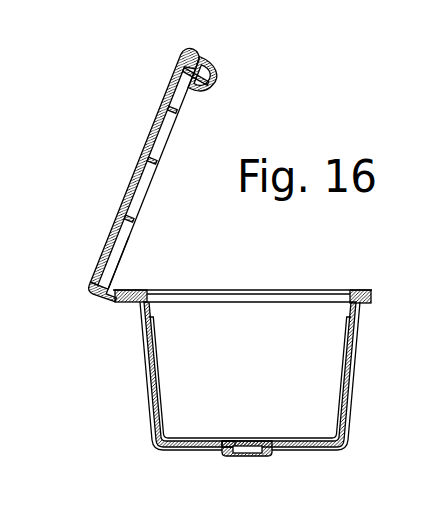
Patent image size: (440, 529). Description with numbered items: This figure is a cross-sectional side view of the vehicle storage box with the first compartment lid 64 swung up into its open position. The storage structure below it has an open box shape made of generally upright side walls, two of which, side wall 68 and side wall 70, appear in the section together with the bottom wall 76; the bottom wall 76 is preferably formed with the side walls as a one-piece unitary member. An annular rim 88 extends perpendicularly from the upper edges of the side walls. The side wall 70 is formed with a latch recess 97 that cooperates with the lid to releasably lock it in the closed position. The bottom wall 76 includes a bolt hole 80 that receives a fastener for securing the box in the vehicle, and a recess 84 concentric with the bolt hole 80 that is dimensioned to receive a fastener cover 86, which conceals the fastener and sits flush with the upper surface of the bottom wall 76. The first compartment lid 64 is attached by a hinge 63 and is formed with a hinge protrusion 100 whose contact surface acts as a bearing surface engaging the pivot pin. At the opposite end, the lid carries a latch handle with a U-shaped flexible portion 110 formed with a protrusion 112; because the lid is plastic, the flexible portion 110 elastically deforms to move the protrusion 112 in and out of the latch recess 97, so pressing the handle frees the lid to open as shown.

The first compartment lid 64 is at (154, 121).
The protrusion 112 is at (212, 67).
The flexible portion 110 is at (197, 90).
The hinge protrusion 100 is at (120, 250).
The annular rim 88 is at (133, 290).
The hinge 63 is at (109, 312).
The side wall 68 is at (150, 390).
The side wall 70 is at (350, 378).
The bottom wall 76 is at (300, 449).
The bolt hole 80 is at (250, 451).
The recess 84 is at (238, 440).
The fastener cover 86 is at (252, 443).
The latch recess 97 is at (352, 299).